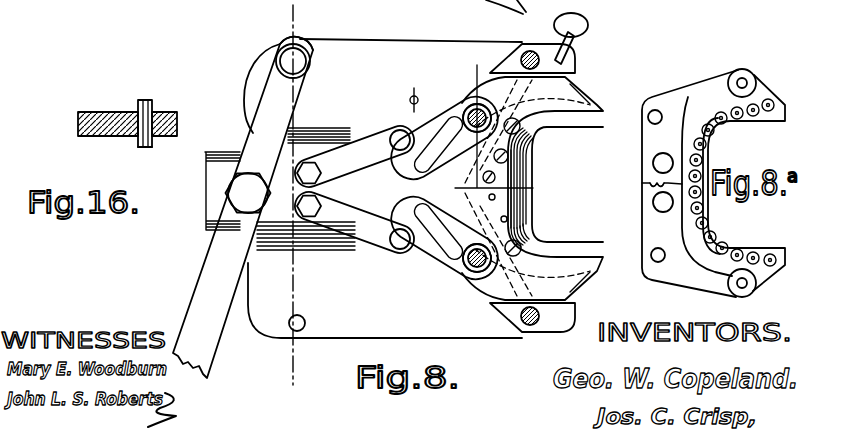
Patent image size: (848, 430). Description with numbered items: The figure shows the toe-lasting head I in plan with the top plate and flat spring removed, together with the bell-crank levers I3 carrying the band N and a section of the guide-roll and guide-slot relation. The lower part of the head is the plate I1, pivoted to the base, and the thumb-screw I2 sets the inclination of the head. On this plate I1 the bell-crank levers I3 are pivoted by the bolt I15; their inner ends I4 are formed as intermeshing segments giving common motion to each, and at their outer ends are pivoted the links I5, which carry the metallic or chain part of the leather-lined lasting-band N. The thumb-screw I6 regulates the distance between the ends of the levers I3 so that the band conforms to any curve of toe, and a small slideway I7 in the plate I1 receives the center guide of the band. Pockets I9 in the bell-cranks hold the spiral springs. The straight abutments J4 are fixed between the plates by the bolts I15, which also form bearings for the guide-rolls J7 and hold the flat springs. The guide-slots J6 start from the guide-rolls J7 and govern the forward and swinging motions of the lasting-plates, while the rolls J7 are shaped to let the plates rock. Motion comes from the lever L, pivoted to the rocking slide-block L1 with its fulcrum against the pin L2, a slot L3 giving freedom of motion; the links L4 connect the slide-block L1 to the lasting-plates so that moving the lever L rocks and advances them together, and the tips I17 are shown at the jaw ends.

In FIG. 16, the toe-lasting head I is at (98, 112).
In FIG. 8, the plate I1 is at (385, 188).
In FIG. 8, the thumb-screw I2 is at (421, 93).
In FIG. 8A, the bell-crank levers I3 is at (713, 183).
In FIG. 8A, the inner ends I4 is at (650, 183).
In FIG. 8A, the links I5 is at (748, 86).
In FIG. 8, the thumb-screw I6 is at (579, 38).
In FIG. 16, the slideway I7 is at (155, 97).
In FIG. 8A, the pockets I9 is at (662, 163).
In FIG. 16, the bolts I15 is at (152, 142).
In FIG. 8, the bolts I15 is at (469, 116).
In FIG. 8, the jaw tip I17 is at (577, 128).
In FIG. 8, the lever L is at (243, 207).
In FIG. 8, the rocking slide-block L1 is at (286, 171).
In FIG. 8, the fulcrum-pin L2 is at (300, 58).
In FIG. 8, the slot L3 is at (308, 67).
In FIG. 8, the links L4 is at (354, 189).
In FIG. 8, the straight abutments J4 is at (518, 48).
In FIG. 8, the guide-slots J6 is at (444, 188).
In FIG. 8, the guide-rolls J7 is at (462, 118).
In FIG. 8A, the lasting-band N is at (713, 150).